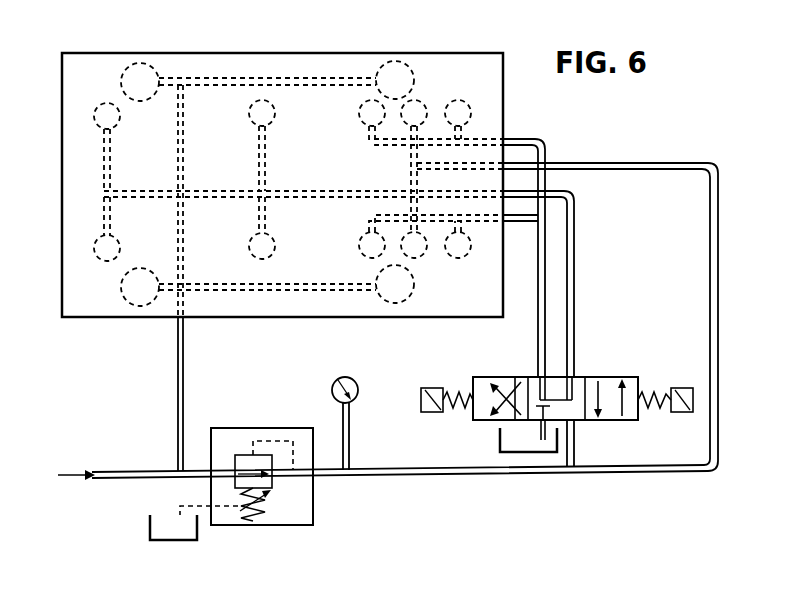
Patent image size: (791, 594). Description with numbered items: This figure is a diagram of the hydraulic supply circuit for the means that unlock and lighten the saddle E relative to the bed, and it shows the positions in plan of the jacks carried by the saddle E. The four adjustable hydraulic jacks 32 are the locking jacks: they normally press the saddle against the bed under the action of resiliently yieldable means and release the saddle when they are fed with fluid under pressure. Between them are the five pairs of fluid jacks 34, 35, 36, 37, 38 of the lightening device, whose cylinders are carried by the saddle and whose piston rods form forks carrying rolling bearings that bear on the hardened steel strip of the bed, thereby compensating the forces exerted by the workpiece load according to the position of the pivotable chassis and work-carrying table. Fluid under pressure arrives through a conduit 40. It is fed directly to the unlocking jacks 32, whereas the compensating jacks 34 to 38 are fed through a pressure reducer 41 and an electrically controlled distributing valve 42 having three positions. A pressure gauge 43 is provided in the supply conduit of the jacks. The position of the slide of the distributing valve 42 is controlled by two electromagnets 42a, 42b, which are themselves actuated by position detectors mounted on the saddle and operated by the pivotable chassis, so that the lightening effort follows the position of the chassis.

The adjustable hydraulic jacks 32 is at (122, 90).
The fluid jacks 34 is at (469, 102).
The fluid jacks 35 is at (423, 102).
The fluid jacks 36 is at (360, 118).
The fluid jacks 37 is at (250, 118).
The fluid jacks 38 is at (120, 121).
The conduit 40 is at (128, 470).
The pressure reducer 41 is at (249, 422).
The electrically controlled distributing valve 42 is at (611, 374).
The electromagnet 42a is at (683, 388).
The electromagnet 42b is at (433, 388).
The pressure gauge 43 is at (332, 391).
The saddle E is at (306, 324).